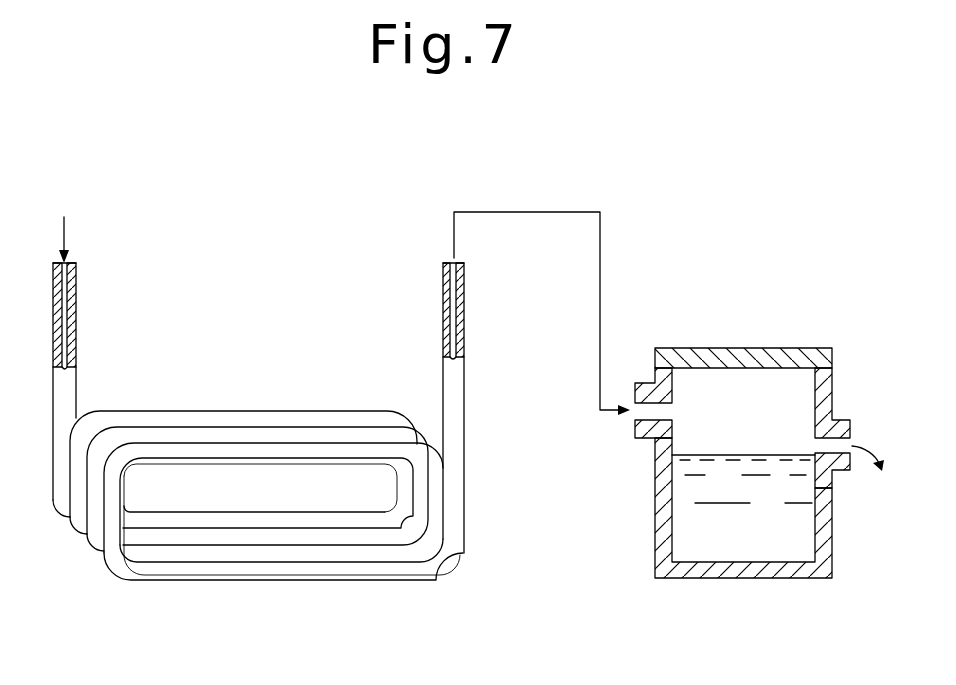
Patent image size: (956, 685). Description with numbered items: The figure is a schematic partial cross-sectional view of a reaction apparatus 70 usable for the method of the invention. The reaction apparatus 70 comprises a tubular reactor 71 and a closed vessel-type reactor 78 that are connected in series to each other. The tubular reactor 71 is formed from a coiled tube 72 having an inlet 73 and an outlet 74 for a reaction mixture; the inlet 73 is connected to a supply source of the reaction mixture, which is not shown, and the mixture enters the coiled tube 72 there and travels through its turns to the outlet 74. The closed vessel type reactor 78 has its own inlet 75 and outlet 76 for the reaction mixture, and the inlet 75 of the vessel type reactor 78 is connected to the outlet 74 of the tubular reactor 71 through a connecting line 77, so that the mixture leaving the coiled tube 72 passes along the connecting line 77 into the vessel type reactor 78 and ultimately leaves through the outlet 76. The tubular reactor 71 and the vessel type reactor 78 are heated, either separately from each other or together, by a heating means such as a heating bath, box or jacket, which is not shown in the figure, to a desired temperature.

The reaction apparatus 70 is at (405, 197).
The tubular reactor 71 is at (252, 374).
The coiled tube 72 is at (71, 386).
The inlet 73 is at (68, 275).
The outlet 74 is at (452, 310).
The inlet 75 is at (645, 411).
The outlet 76 is at (850, 440).
The connecting line 77 is at (562, 210).
The closed vessel-type reactor 78 is at (746, 336).